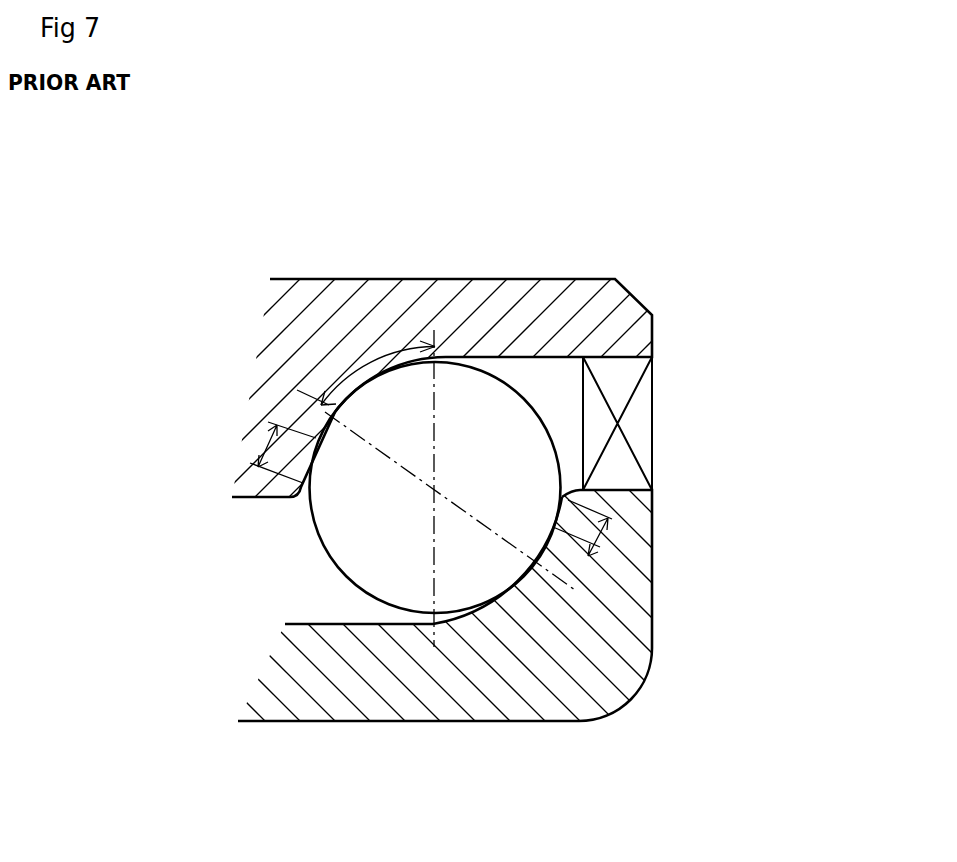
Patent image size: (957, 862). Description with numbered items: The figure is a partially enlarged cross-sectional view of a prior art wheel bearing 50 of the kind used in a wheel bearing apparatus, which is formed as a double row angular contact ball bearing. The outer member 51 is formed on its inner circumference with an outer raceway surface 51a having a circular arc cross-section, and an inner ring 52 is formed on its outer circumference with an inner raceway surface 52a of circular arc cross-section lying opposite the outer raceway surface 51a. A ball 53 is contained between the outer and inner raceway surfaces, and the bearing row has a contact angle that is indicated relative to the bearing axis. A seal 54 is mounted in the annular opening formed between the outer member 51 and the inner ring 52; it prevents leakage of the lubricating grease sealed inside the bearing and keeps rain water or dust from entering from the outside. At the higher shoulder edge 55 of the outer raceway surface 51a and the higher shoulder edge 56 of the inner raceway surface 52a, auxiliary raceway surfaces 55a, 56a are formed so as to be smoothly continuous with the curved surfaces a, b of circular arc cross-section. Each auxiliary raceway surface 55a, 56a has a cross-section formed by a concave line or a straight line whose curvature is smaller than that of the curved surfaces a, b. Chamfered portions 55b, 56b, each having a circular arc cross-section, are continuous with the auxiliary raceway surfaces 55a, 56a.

The wheel bearing 50 is at (313, 256).
The outer member 51 is at (399, 290).
The outer raceway surface 51a is at (386, 373).
The inner ring 52 is at (554, 677).
The inner raceway surface 52a is at (522, 580).
The ball 53 is at (352, 563).
The seal 54 is at (628, 417).
The higher shoulder edge 55 is at (134, 432).
The auxiliary raceway surface 55a is at (262, 442).
The chamfered portion 55b is at (299, 488).
The higher shoulder edge 56 is at (760, 482).
The auxiliary raceway surface 56a is at (600, 522).
The chamfered portion 56b is at (573, 489).
The curved surface a is at (350, 406).
The curved surface b is at (533, 556).